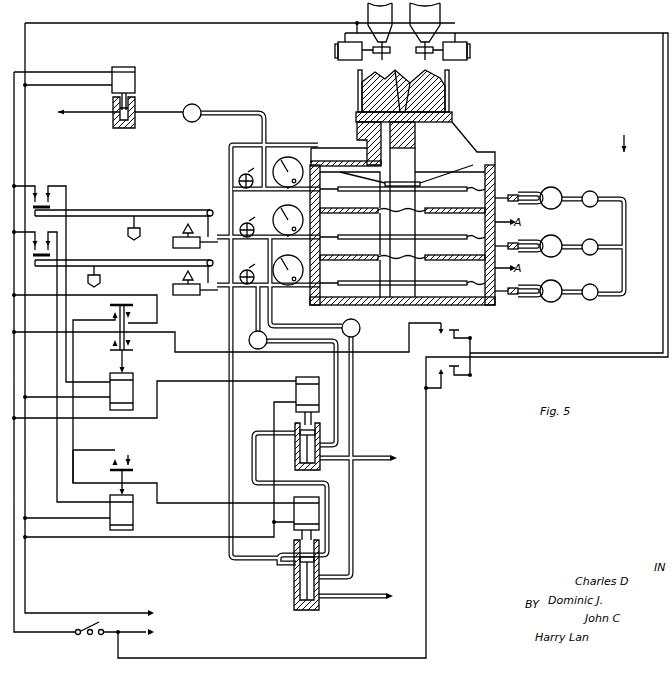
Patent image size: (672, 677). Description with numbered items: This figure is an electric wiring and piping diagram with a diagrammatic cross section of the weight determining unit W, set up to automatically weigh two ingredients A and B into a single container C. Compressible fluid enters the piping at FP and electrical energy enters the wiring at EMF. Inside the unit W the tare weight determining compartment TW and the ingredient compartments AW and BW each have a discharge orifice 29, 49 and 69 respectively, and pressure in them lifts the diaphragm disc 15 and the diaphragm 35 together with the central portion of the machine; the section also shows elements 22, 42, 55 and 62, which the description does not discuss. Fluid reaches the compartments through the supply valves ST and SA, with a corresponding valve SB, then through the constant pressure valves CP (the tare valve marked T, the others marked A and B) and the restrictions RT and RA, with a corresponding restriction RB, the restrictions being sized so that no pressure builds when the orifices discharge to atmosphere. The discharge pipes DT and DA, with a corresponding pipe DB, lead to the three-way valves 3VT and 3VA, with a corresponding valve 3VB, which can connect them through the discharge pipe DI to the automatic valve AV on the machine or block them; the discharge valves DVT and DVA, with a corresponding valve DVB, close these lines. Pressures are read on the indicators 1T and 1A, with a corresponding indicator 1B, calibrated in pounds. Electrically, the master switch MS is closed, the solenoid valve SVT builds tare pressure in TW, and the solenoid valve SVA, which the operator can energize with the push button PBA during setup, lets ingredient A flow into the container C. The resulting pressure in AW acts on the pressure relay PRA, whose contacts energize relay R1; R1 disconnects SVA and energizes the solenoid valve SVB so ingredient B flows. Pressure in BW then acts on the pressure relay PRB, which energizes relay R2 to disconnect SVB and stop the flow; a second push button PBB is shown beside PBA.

The diaphragm disc 15 is at (440, 189).
The upper partition wall 22 is at (337, 211).
The tare weight discharge orifice 29 is at (402, 195).
The diaphragm 35 is at (441, 236).
The lower partition wall 42 is at (338, 258).
The discharge orifice 49 is at (402, 243).
The lower plate 55 is at (436, 283).
The bottom wall 62 is at (397, 304).
The discharge orifice 69 is at (402, 289).
The solenoid valve SVT is at (112, 97).
The discharge valve DVT is at (200, 106).
The solenoid valve SVA is at (335, 236).
The solenoid valve SVB is at (389, 306).
The discharge valve DVA is at (365, 329).
The diaphragm valve B DVB is at (273, 339).
The three-way valve 3VT is at (245, 172).
The three-way valve 3VA is at (244, 223).
The three-way valve B 3VB is at (245, 270).
The indicator 1T is at (288, 169).
The indicator 1A is at (288, 217).
The gauge B 1B is at (288, 266).
The relay R1 is at (121, 357).
The relay R2 is at (103, 490).
The pressure actuated relay PRA is at (125, 223).
The pressure relay PRB is at (125, 271).
The push button PBA is at (470, 335).
The push button B PBB is at (471, 375).
The master switch MS is at (87, 638).
The electrical energy input EMF is at (171, 622).
The fluid pressure inlet FP is at (620, 136).
The weight determining unit W is at (497, 171).
The automatic valve AV is at (370, 143).
The discharge pipe DI is at (308, 143).
The container C is at (358, 78).
The ingredient A is at (368, 97).
The ingredient B is at (432, 90).
The discharge pipe DT is at (314, 186).
The discharge pipe DA is at (316, 233).
The chamber B DB is at (316, 279).
The tare weight determining compartment TW is at (455, 204).
The ingredient weight determining compartment AW is at (455, 250).
The weight determining compartment BW is at (444, 293).
The restriction RT is at (508, 190).
The restriction RA is at (507, 238).
The regulator B RB is at (507, 283).
The constant pressure valve CP is at (527, 258).
The constant pressure valve (tare) T is at (557, 194).
The supply valve ST is at (597, 193).
The supply valve SA is at (576, 242).
The selector B SB is at (576, 287).